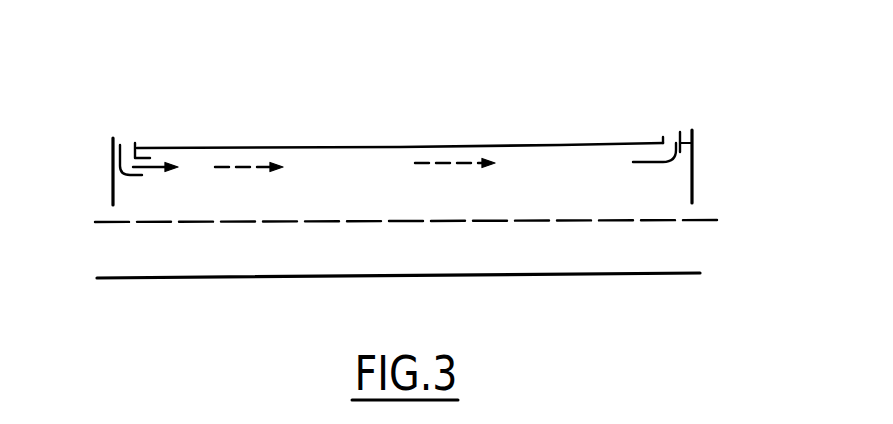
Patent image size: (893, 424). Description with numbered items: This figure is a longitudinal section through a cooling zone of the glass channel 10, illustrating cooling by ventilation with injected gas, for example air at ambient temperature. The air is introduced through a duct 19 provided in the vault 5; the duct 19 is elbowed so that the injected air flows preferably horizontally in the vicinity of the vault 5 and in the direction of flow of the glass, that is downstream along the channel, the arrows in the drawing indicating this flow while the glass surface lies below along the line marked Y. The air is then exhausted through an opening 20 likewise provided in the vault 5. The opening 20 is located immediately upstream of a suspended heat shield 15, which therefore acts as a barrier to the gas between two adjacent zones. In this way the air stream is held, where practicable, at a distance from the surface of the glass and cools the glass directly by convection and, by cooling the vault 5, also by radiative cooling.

The vault 5 is at (365, 138).
The apparatus 10 is at (490, 82).
The suspended heat shield 15 is at (113, 192).
The duct 19 is at (131, 128).
The opening 20 is at (677, 120).
The path Y is at (663, 233).